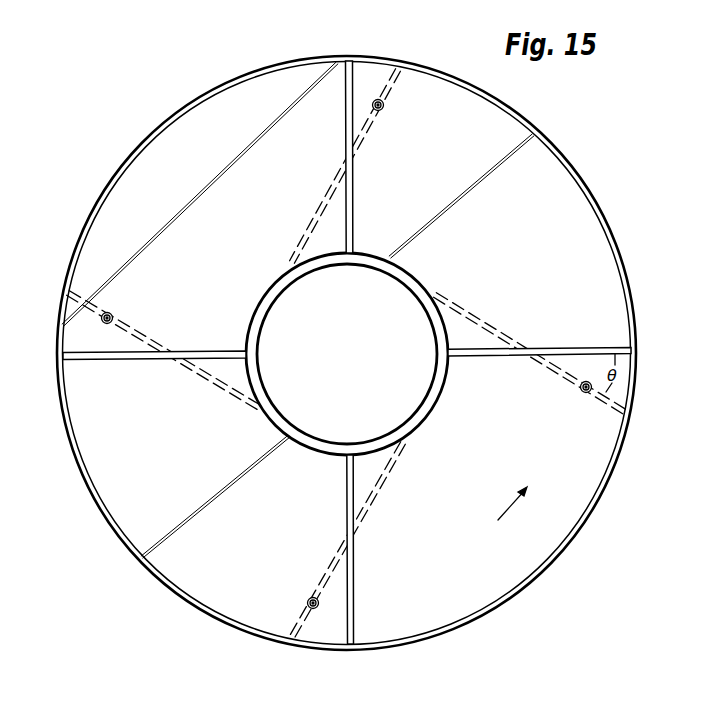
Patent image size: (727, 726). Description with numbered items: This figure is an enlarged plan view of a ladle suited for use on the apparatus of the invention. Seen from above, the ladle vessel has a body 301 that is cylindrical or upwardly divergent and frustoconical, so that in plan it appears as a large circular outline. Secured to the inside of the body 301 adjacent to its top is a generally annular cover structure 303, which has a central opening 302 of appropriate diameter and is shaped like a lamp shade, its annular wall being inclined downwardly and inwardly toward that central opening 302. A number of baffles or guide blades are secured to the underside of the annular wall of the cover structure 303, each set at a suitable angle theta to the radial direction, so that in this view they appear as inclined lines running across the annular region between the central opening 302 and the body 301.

The body 301 is at (587, 181).
The hub ring 302 is at (284, 297).
The annular cover structure 303 is at (226, 269).